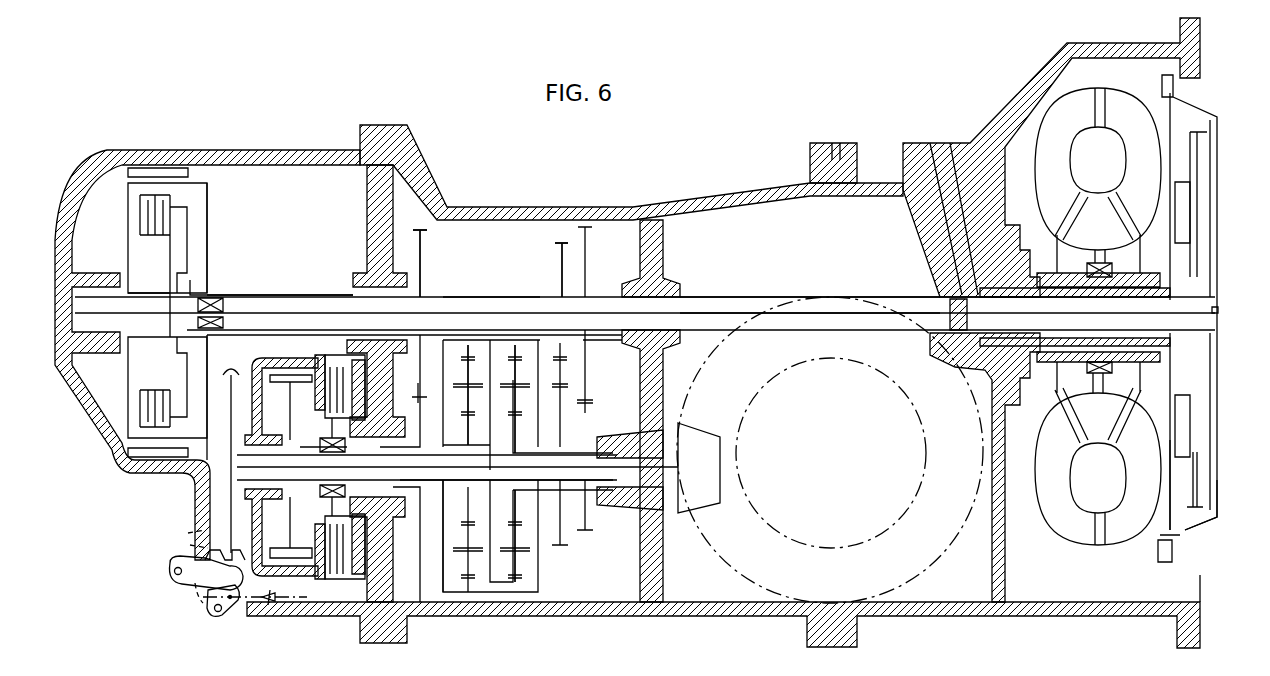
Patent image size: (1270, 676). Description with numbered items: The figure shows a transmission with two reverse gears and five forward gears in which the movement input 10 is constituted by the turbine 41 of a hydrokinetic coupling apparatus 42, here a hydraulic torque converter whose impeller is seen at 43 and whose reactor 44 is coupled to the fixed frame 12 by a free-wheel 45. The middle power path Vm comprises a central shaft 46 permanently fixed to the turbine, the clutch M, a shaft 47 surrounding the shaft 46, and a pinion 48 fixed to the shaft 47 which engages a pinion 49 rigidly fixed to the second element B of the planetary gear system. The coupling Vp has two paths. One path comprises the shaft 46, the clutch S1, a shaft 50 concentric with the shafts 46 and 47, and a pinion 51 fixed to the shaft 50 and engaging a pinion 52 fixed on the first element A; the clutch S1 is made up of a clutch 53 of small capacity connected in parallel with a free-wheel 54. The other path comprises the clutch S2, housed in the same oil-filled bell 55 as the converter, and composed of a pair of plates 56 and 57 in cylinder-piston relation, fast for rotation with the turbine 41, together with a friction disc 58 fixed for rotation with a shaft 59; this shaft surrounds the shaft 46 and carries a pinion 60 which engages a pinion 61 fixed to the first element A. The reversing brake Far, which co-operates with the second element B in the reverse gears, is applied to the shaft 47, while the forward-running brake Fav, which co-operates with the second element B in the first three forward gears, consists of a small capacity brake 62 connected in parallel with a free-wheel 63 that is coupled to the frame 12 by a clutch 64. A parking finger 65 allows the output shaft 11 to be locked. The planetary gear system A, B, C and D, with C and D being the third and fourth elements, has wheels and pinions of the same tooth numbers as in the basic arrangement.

The reversing brake Far is at (168, 170).
The clutch M is at (140, 218).
The clutch S1 is at (210, 297).
The clutch of small capacity 53 is at (170, 293).
The free-wheel 54 is at (223, 303).
The shaft 47 is at (285, 295).
The middle power path Vm is at (334, 278).
The pinion 48 is at (420, 262).
The shaft 50 is at (467, 297).
The coupling Vp is at (507, 285).
The pinion 51 is at (562, 273).
The pinion 60 is at (587, 380).
The central shaft 46 is at (723, 313).
The shaft 59 is at (900, 302).
The fixed frame 12 is at (900, 142).
The hydrokinetic coupling apparatus 42 is at (1055, 90).
The turbine 41 is at (1128, 118).
The impeller 43 is at (1053, 147).
The movement input 10 is at (1153, 122).
The clutch S2 is at (1193, 212).
The reactor 44 is at (1107, 239).
The free-wheel 45 is at (1098, 453).
The friction disc 58 is at (1183, 428).
The plate 56 is at (1173, 475).
The plate 57 is at (1193, 493).
The bell 55 is at (1200, 530).
The output shaft 11 is at (632, 457).
The small capacity brake 62 is at (273, 370).
The clutch 64 is at (327, 362).
The free-wheel 63 is at (320, 445).
The pinion 49 is at (412, 400).
The fourth element D is at (478, 405).
The first element A is at (505, 405).
The third element C is at (500, 472).
The second element B is at (440, 563).
The pinion 52 is at (567, 543).
The pinion 61 is at (587, 523).
The forward-running brake Fav is at (340, 530).
The parking finger 65 is at (187, 588).